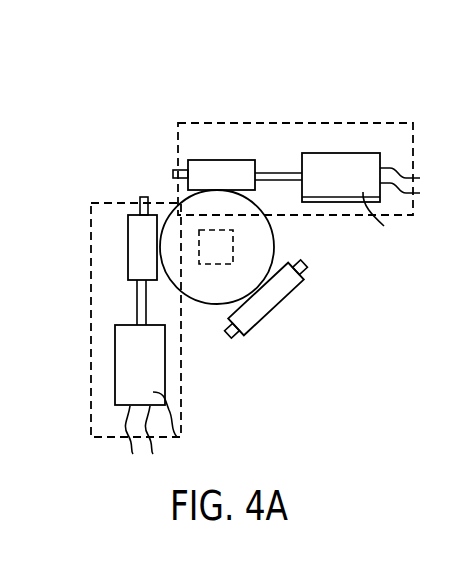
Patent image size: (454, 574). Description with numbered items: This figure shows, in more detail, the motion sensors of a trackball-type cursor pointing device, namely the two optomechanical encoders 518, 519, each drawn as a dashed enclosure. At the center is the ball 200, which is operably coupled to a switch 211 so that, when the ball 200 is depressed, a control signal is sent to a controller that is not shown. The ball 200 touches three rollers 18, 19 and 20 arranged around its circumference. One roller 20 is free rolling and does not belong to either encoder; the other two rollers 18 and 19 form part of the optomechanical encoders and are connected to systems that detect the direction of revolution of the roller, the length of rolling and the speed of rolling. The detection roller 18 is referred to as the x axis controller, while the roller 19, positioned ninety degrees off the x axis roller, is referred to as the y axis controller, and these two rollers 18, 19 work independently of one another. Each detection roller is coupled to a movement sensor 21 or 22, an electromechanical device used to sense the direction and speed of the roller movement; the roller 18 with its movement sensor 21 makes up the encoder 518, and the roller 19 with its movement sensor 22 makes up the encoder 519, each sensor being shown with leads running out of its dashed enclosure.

The optomechanical encoder 519 is at (207, 122).
The optomechanical encoder 518 is at (88, 353).
The ball 200 is at (244, 214).
The switch 211 is at (232, 254).
The roller 19 is at (197, 165).
The movement sensor 22 is at (338, 180).
The roller 20 is at (267, 308).
The roller 18 is at (138, 245).
The movement sensor 21 is at (158, 362).